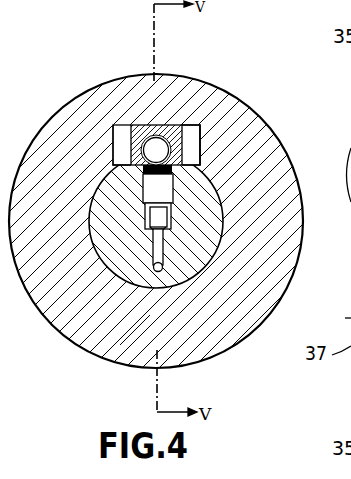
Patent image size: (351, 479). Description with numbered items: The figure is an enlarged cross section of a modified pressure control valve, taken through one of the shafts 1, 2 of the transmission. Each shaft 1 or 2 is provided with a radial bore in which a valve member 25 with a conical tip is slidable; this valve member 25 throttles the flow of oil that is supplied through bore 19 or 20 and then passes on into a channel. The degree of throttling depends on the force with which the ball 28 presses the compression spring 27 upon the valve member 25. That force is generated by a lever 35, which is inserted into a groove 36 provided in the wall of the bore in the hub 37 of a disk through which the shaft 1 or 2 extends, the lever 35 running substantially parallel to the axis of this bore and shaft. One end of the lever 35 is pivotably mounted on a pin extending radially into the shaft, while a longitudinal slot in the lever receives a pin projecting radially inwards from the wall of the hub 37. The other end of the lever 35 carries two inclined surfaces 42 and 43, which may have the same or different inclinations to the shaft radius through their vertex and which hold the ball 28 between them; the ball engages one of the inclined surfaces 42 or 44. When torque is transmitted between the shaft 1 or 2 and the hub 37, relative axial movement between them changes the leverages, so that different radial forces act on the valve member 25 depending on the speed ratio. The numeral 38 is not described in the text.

The shaft 1 is at (180, 221).
The shaft 2 is at (350, 163).
The bore 19 is at (249, 297).
The bore 20 is at (163, 268).
The valve member 25 is at (153, 250).
The compression spring 27 is at (176, 166).
The ball 28 is at (168, 153).
The lever 35 is at (183, 124).
The groove 36 is at (125, 133).
The hub 37 is at (133, 332).
The inner body 38 is at (90, 228).
The inclined surface 42 is at (143, 152).
The inclined surface 43 is at (193, 126).
The inclined surface 44 is at (152, 126).